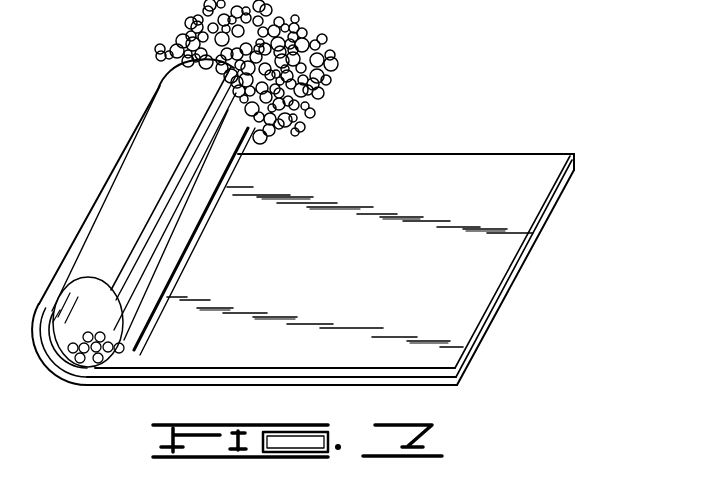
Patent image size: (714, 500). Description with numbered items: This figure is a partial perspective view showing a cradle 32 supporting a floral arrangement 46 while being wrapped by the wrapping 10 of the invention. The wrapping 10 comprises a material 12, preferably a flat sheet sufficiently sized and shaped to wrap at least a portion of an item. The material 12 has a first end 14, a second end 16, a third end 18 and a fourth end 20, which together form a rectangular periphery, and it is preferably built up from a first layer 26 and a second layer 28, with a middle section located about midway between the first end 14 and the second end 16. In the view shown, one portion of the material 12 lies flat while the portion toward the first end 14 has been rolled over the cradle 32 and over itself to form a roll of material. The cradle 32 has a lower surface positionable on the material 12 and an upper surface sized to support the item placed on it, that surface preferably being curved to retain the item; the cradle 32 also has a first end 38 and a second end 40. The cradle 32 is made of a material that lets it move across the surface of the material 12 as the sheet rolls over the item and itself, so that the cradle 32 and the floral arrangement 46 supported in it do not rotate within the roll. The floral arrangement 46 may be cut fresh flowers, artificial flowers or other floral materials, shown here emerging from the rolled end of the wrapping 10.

The wrapping 10 is at (511, 130).
The material 12 is at (418, 153).
The first end 14 is at (158, 210).
The second end 16 is at (552, 212).
The third end 18 is at (217, 376).
The fourth end 20 is at (379, 154).
The first layer 26 is at (496, 308).
The second layer 28 is at (475, 350).
The cradle 32 is at (110, 374).
The first end 38 is at (72, 378).
The second end 40 is at (248, 130).
The floral arrangement 46 is at (323, 28).